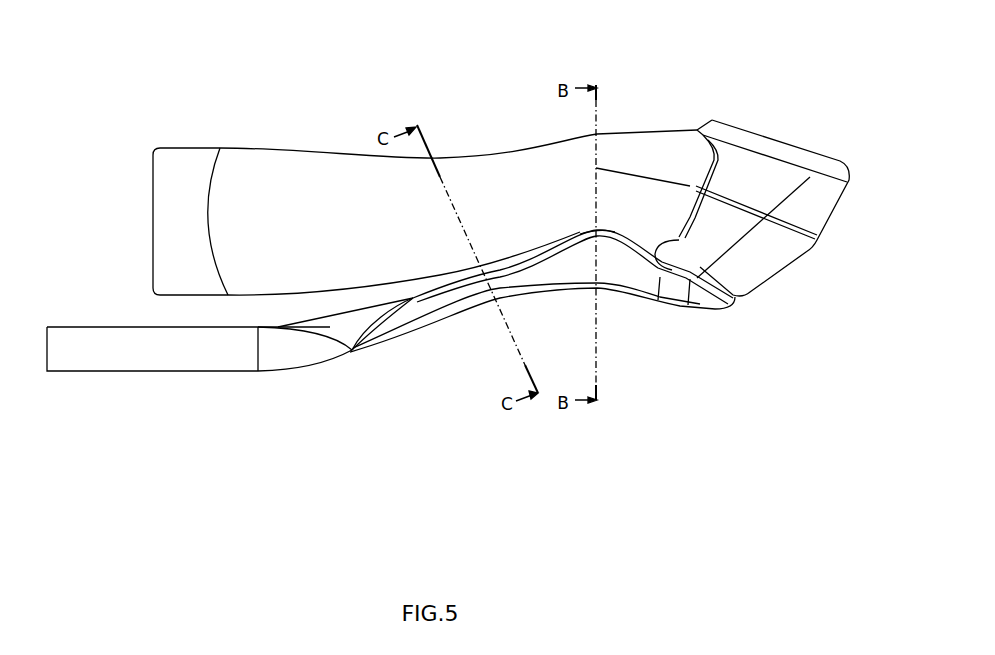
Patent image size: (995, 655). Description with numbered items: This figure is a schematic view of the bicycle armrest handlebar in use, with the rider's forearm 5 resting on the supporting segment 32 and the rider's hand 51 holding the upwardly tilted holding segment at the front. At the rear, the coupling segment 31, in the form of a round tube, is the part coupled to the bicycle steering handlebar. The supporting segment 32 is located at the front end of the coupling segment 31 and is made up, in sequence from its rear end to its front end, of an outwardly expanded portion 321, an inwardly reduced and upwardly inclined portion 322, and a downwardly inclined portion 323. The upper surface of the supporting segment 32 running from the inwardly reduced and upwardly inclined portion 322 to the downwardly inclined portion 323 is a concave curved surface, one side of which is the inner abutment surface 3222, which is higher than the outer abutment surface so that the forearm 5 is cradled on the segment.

The forearm 5 is at (245, 185).
The hand 51 is at (767, 148).
The coupling segment 31 is at (123, 360).
The supporting segment 32 is at (403, 497).
The outwardly expanded portion 321 is at (323, 350).
The inwardly reduced and upwardly inclined portion 322 is at (453, 300).
The downwardly inclined portion 323 is at (636, 285).
The inner abutment surface 3222 is at (608, 228).